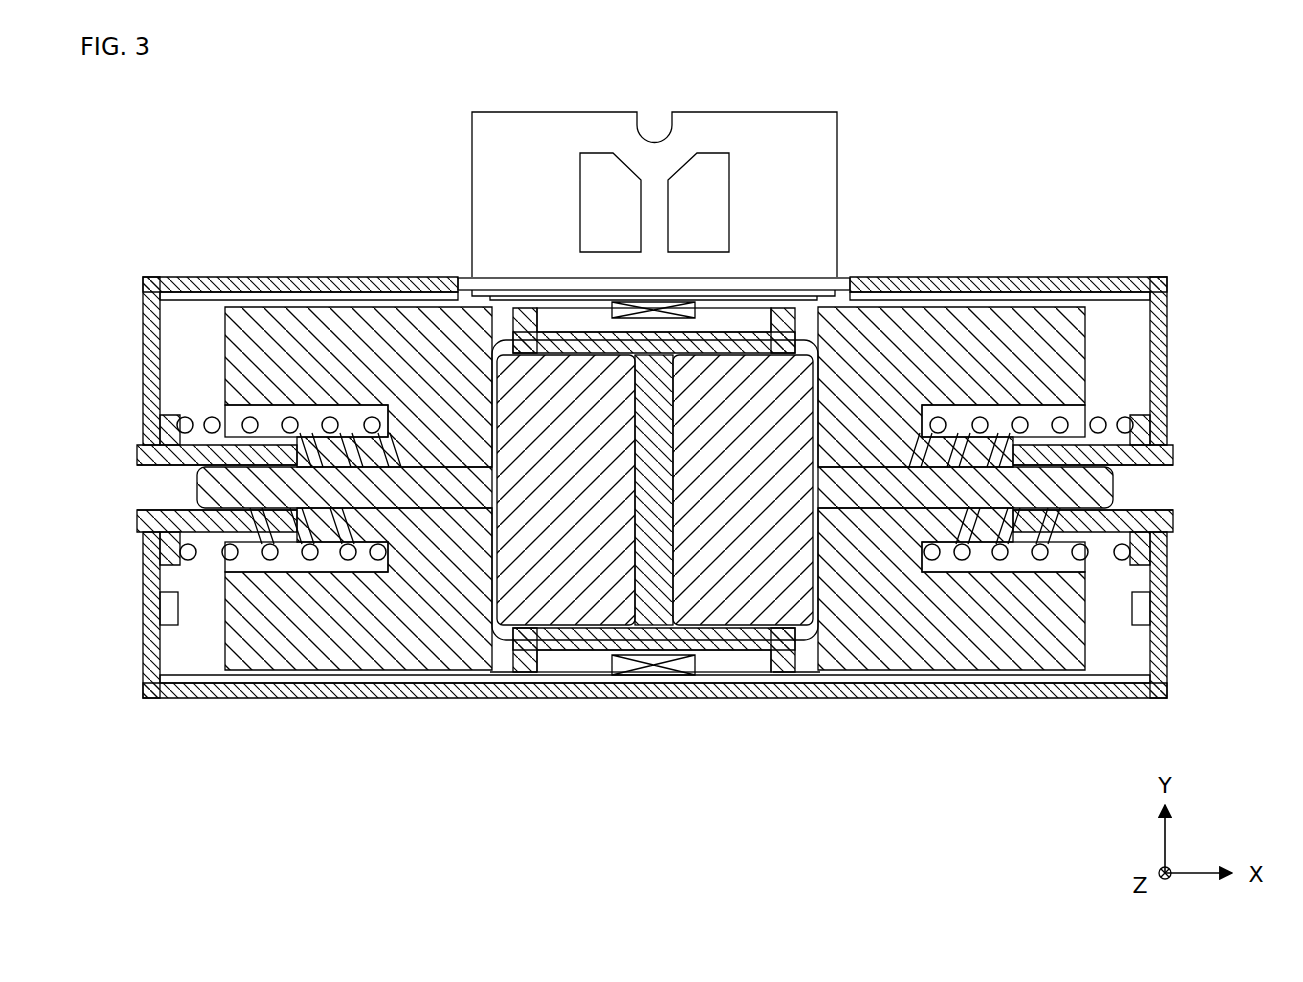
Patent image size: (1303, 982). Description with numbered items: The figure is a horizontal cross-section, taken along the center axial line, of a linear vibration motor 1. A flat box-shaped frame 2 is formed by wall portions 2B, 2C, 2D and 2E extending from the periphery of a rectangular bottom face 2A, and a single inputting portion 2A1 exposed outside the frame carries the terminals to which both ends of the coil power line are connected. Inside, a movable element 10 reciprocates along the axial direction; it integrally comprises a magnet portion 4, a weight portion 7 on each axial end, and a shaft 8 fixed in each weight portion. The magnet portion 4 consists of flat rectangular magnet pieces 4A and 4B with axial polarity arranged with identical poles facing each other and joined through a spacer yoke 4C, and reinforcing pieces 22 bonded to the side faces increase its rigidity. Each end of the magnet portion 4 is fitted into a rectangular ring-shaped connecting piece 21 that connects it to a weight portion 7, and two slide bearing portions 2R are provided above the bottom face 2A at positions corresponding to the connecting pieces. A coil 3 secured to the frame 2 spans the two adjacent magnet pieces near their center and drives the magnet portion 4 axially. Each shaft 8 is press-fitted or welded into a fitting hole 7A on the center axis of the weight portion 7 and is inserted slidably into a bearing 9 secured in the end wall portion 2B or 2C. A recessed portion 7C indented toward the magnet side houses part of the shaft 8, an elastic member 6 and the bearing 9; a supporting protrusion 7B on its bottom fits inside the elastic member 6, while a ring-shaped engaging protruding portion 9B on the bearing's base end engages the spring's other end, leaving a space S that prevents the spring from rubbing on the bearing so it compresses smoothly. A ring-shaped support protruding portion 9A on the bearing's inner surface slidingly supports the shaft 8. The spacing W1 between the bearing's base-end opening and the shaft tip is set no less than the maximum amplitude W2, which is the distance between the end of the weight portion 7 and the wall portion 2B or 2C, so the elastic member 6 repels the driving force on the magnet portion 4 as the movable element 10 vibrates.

The linear vibration motor 1 is at (1038, 155).
The frame 2 is at (654, 514).
The bottom face 2A is at (1118, 660).
The inputting portion 2A1 is at (735, 112).
The wall portion 2B is at (147, 326).
The wall portion 2C is at (1167, 306).
The wall portion 2D is at (440, 695).
The wall portion 2E is at (238, 284).
The slide bearing portion 2R is at (546, 676).
The coil 3 is at (665, 428).
The magnet portion 4 is at (655, 589).
The magnet piece 4A is at (582, 620).
The magnet piece 4B is at (723, 622).
The spacer yoke 4C is at (658, 645).
The elastic member 6 is at (183, 405).
The weight portion 7 is at (655, 491).
The fitting hole 7A is at (428, 477).
The supporting protrusion 7B is at (367, 578).
The recessed portion 7C is at (350, 408).
The shaft 8 is at (330, 545).
The bearing 9 is at (655, 561).
The support protruding portion 9A is at (300, 500).
The engaging protruding portion 9B is at (185, 558).
The movable element 10 is at (206, 311).
The connecting piece 21 is at (520, 670).
The reinforcing piece 22 is at (573, 315).
The space S is at (213, 545).
The spacing W1 is at (195, 497).
The maximum amplitude W2 is at (223, 357).